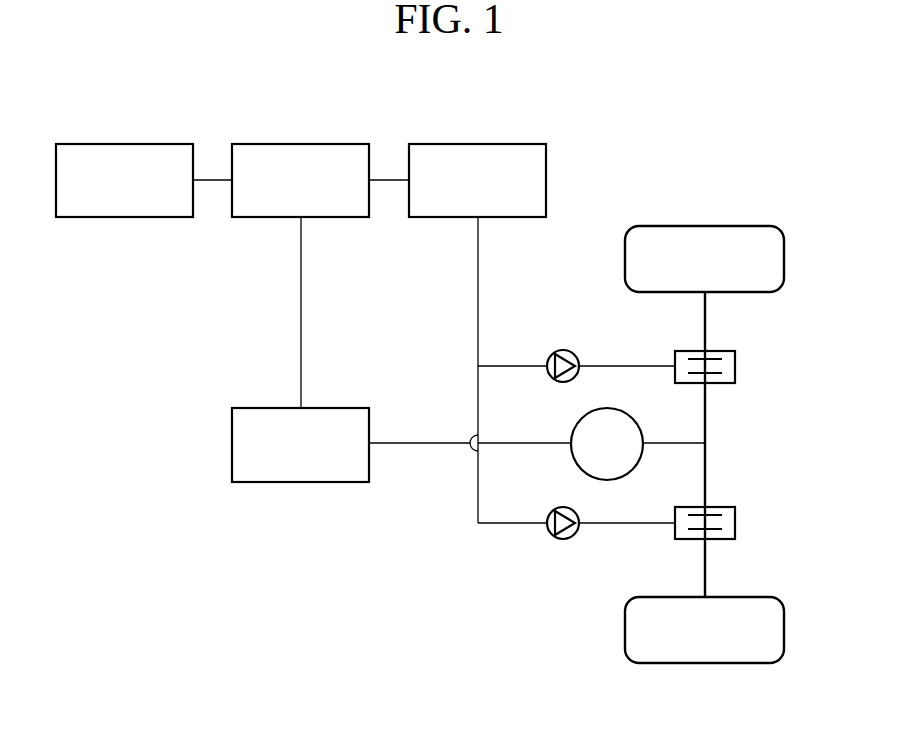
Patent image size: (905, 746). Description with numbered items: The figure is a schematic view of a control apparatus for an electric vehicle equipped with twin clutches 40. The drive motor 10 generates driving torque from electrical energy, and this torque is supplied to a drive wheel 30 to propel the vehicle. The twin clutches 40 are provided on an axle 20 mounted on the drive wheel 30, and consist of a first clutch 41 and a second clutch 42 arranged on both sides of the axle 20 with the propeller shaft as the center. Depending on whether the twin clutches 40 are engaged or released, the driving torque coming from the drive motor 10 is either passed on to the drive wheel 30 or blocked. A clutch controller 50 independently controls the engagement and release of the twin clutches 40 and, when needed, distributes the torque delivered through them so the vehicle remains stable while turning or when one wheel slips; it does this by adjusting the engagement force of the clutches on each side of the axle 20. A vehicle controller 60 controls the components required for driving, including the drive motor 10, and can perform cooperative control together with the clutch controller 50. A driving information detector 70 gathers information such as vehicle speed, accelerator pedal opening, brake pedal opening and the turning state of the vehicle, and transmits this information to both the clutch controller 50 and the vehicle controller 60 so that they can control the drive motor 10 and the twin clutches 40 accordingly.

The drive motor 10 is at (302, 482).
The axle 20 is at (706, 565).
The drive wheel 30 is at (784, 258).
The twin clutches 40 is at (756, 445).
The first clutch 41 is at (735, 365).
The second clutch 42 is at (734, 523).
The clutch controller 50 is at (479, 144).
The vehicle controller 60 is at (301, 144).
The driving information detector 70 is at (125, 144).